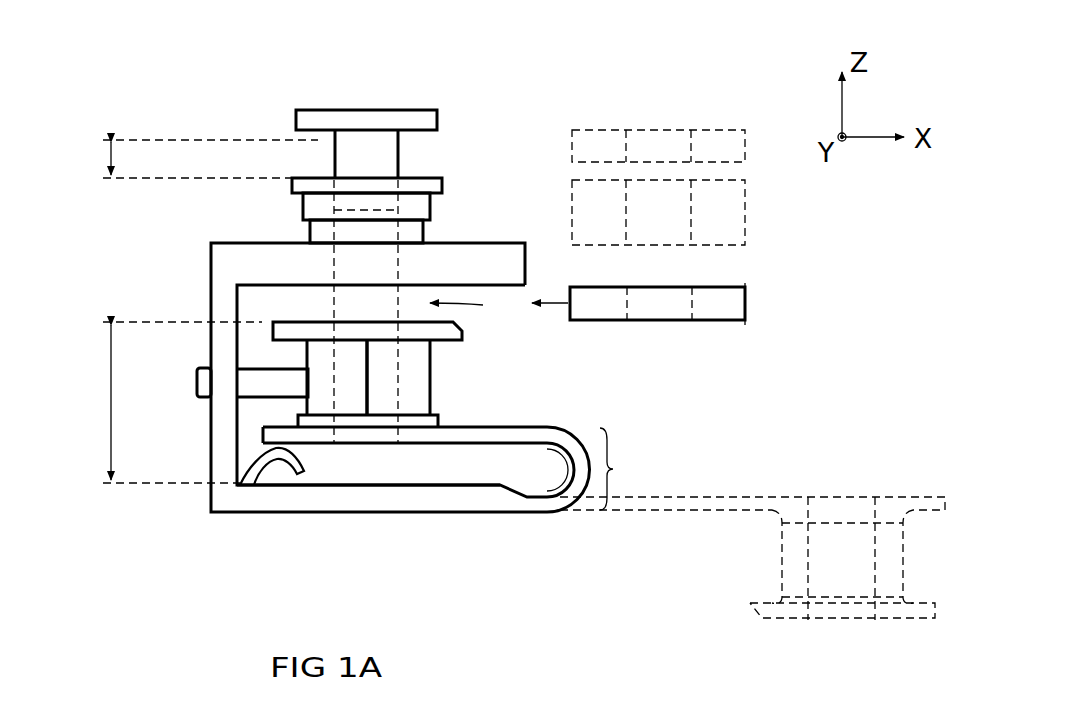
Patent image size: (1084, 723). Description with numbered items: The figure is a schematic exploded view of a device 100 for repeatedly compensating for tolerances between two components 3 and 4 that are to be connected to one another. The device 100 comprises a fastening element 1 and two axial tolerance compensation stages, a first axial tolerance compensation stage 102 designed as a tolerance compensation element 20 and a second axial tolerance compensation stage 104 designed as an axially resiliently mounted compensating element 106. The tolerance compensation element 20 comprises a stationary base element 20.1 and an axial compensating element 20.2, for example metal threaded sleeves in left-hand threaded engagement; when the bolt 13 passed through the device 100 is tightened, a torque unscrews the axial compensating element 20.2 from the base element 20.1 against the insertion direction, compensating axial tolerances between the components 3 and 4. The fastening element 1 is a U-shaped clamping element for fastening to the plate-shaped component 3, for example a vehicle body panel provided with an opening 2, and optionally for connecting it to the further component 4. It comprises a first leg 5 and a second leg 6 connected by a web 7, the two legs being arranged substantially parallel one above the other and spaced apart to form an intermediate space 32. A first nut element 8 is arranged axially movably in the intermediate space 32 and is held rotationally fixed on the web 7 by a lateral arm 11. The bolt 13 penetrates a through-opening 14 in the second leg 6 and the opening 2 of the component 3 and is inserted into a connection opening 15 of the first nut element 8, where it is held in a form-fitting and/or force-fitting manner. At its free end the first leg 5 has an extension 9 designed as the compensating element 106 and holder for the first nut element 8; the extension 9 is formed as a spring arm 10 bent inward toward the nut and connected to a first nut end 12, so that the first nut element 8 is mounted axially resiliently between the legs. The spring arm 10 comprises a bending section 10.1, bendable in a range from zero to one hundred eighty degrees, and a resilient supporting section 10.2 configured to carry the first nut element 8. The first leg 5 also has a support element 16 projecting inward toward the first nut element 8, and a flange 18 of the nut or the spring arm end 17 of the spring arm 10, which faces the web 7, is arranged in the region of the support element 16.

The fastening element 1 is at (214, 135).
The device 100 is at (562, 68).
The first axial tolerance compensation stage 102 is at (189, 159).
The second axial tolerance compensation stage 104 is at (161, 402).
The bolt 13 is at (433, 120).
The through-opening 14 is at (352, 262).
The second leg 6 is at (458, 255).
The tolerance compensation element 20 is at (290, 186).
The base element 20.1 is at (303, 207).
The axial compensating element 20.2 is at (310, 235).
The web 7 is at (222, 448).
The lateral arm 11 is at (252, 382).
The first leg 5 is at (400, 493).
The support element 16 is at (242, 460).
The flange 18 is at (287, 470).
The first nut element 8 is at (417, 368).
The connection opening 15 is at (392, 373).
The first nut end 12 is at (413, 420).
The spring arm end 17 is at (262, 437).
The spring arm 10 is at (559, 425).
The bending section 10.1 is at (634, 469).
The supporting section 10.2 is at (444, 436).
The extension 9 is at (548, 507).
The compensating element 106 is at (549, 378).
The component 3 is at (745, 300).
The opening 2 is at (667, 320).
The intermediate space 32 is at (499, 305).
The further component 4 is at (722, 145).